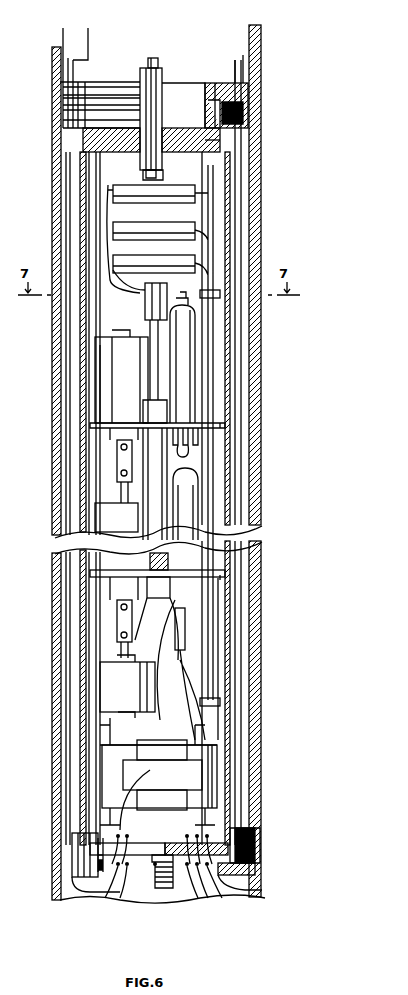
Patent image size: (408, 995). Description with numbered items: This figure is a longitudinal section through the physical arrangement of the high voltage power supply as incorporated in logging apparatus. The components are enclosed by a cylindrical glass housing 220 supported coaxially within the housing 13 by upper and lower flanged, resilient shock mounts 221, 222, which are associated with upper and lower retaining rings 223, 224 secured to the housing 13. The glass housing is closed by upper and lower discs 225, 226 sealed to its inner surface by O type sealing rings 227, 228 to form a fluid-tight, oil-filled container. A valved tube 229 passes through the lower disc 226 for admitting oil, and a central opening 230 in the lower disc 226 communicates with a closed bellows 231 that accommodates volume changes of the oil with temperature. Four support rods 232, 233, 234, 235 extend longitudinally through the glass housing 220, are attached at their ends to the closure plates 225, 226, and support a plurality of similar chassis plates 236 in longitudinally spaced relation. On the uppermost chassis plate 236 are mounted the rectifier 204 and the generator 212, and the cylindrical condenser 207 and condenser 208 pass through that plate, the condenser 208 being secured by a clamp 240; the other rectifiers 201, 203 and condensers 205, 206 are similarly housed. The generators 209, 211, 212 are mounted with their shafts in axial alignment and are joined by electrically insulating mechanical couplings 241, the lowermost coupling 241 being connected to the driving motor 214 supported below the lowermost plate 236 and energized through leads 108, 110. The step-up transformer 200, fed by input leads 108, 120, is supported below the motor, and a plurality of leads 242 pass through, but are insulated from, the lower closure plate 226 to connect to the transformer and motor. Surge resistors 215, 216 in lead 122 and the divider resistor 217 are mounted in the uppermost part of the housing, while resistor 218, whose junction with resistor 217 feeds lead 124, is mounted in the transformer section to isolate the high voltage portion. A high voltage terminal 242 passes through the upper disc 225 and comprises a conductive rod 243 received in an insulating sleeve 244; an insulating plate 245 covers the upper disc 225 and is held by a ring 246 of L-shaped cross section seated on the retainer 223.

The housing 13 is at (52, 175).
The input lead 108 is at (90, 45).
The power lead 110 is at (235, 60).
The input lead 120 is at (63, 50).
The lead 122 is at (130, 186).
The lead 124 is at (243, 55).
The step-up transformer 200 is at (210, 775).
The diode rectifier 201 is at (198, 562).
The diode rectifier 203 is at (190, 500).
The diode rectifier 204 is at (185, 350).
The charging condenser 205 is at (100, 570).
The charging condenser 206 is at (150, 545).
The charging condenser 207 is at (140, 365).
The charging condenser 208 is at (135, 323).
The generator 209 is at (95, 583).
The generator 211 is at (98, 516).
The generator 212 is at (100, 420).
The motor 214 is at (100, 684).
The surge resistor 215 is at (175, 225).
The surge resistor 216 is at (165, 196).
The resistor 217 is at (140, 263).
The resistor 218 is at (176, 618).
The cylindrical glass housing 220 is at (228, 205).
The upper shock mount 221 is at (242, 115).
The lower shock mount 222 is at (258, 860).
The upper retaining ring 223 is at (240, 100).
The lower retaining ring 224 is at (250, 868).
The upper disc 225 is at (218, 146).
The lower disc 226 is at (238, 832).
The O type sealing ring 227 is at (232, 136).
The O type sealing ring 228 is at (256, 845).
The valved tube 229 is at (105, 866).
The central opening 230 is at (159, 841).
The closed bellows 231 is at (165, 890).
The support rod 232 is at (88, 160).
The support rod 233 is at (98, 312).
The support rod 234 is at (214, 248).
The support rod 235 is at (231, 162).
The chassis plate 236 is at (220, 425).
The clamp 240 is at (110, 428).
The mechanical coupling 241 is at (118, 622).
The leads 242 is at (131, 64).
The electrically conductive rod 243 is at (155, 58).
The sleeve 244 is at (165, 85).
The plate 245 is at (190, 128).
The ring 246 is at (257, 88).